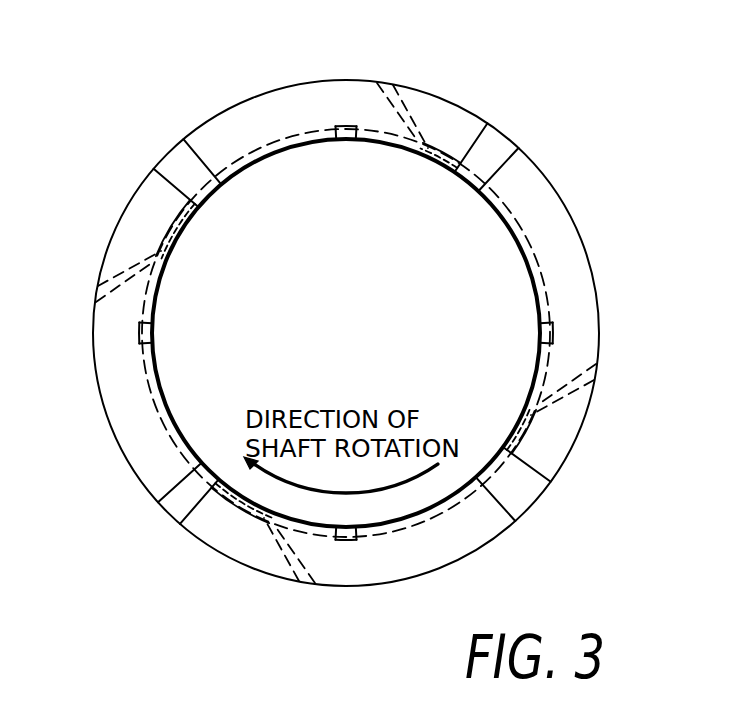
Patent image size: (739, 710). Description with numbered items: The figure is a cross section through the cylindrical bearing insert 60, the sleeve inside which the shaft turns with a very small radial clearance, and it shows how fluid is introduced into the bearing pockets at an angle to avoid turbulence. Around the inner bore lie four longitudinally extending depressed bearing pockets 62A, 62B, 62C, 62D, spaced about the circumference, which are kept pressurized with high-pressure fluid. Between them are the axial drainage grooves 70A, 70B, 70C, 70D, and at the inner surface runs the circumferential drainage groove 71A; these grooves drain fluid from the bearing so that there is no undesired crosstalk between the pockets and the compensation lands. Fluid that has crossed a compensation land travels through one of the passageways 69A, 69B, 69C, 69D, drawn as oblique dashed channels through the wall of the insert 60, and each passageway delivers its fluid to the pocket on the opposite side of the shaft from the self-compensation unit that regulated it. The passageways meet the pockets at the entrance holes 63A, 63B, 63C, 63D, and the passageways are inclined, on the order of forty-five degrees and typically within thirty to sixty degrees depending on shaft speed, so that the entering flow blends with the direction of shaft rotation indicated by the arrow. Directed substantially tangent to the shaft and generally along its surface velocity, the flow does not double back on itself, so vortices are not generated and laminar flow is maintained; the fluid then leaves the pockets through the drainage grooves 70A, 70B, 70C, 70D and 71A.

The bearing insert 60 is at (283, 103).
The circumferential drainage groove 71A is at (372, 145).
The axial drainage groove 70A is at (548, 335).
The axial drainage groove 70B is at (348, 540).
The axial drainage groove 70C is at (140, 340).
The axial drainage groove 70D is at (345, 128).
The bearing pocket 62A is at (490, 126).
The bearing pocket 62B is at (540, 478).
The bearing pocket 62C is at (193, 458).
The bearing pocket 62D is at (178, 198).
The entrance hole 63A is at (420, 144).
The entrance hole 63B is at (532, 425).
The entrance hole 63C is at (265, 520).
The entrance hole 63D is at (158, 247).
The passageway 69A is at (282, 575).
The passageway 69B is at (120, 268).
The passageway 69C is at (405, 110).
The passageway 69D is at (570, 400).